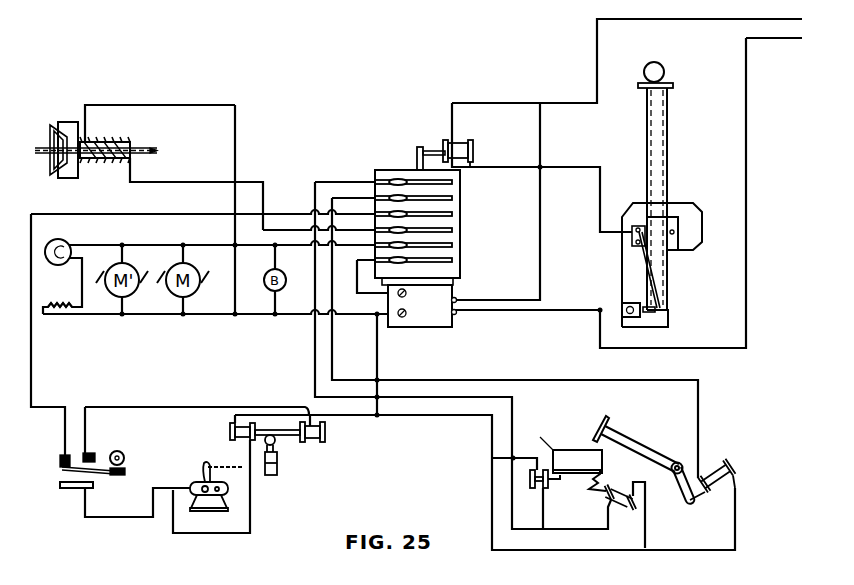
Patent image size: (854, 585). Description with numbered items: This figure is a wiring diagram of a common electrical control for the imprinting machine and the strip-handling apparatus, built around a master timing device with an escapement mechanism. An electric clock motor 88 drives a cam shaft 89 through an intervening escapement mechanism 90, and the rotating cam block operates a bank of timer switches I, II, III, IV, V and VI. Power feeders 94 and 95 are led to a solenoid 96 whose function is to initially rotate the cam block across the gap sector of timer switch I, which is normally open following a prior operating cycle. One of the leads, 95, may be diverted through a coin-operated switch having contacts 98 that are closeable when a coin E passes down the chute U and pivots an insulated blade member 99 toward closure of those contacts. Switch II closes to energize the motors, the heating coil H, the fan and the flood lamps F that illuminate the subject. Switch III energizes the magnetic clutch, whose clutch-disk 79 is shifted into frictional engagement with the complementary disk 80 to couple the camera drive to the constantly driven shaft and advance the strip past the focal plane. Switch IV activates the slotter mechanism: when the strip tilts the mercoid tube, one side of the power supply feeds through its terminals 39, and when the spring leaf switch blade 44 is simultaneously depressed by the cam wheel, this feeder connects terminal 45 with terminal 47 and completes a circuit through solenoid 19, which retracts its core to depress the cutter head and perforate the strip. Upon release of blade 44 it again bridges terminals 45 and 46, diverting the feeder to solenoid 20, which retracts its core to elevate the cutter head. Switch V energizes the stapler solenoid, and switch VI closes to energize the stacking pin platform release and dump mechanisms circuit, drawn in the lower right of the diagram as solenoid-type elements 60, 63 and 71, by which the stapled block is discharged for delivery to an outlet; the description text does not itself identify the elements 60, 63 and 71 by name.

The solenoid 19 is at (230, 432).
The solenoid 20 is at (327, 432).
The terminals 39 is at (197, 485).
The switch blade 44 is at (118, 476).
The terminal 45 is at (60, 462).
The terminal 46 is at (95, 455).
The terminal 47 is at (82, 489).
The solenoid 60 is at (530, 488).
The solenoid 63 is at (633, 510).
The solenoid 71 is at (728, 462).
The clutch-disk 79 is at (54, 176).
The complementary disk 80 is at (68, 122).
The electric clock motor 88 is at (424, 316).
The cam shaft 89 is at (419, 148).
The escapement mechanism 90 is at (455, 283).
The power feeder 94 is at (702, 9).
The power feeder 95 is at (777, 46).
The solenoid 96 is at (472, 145).
The contacts 98 is at (633, 300).
The insulated blade member 99 is at (650, 268).
The coin E is at (665, 67).
The chute U is at (673, 87).
The flood lamps F is at (66, 244).
The heating coil H is at (60, 322).
The timer switch I is at (453, 260).
The switch II is at (453, 245).
The switch III is at (453, 230).
The switch IV is at (453, 214).
The switch V is at (453, 198).
The switch VI is at (453, 182).